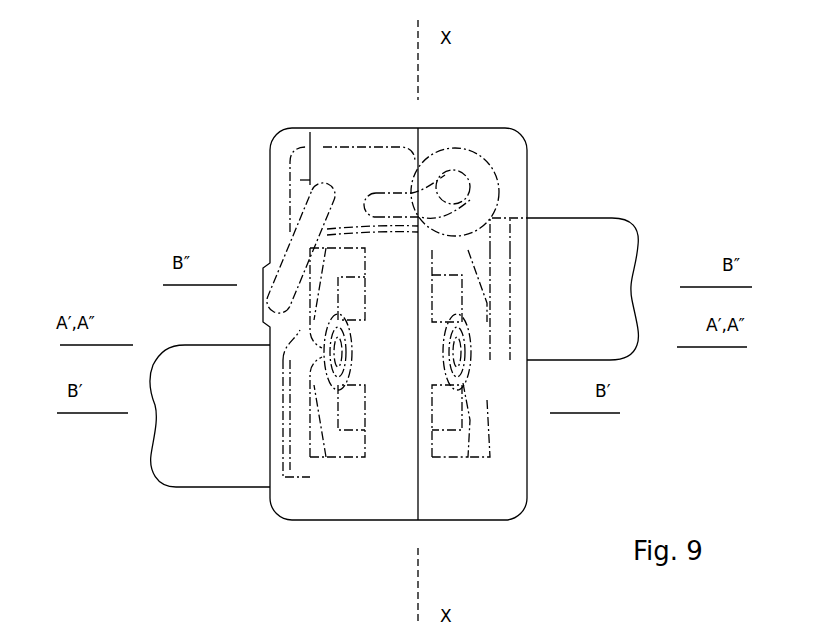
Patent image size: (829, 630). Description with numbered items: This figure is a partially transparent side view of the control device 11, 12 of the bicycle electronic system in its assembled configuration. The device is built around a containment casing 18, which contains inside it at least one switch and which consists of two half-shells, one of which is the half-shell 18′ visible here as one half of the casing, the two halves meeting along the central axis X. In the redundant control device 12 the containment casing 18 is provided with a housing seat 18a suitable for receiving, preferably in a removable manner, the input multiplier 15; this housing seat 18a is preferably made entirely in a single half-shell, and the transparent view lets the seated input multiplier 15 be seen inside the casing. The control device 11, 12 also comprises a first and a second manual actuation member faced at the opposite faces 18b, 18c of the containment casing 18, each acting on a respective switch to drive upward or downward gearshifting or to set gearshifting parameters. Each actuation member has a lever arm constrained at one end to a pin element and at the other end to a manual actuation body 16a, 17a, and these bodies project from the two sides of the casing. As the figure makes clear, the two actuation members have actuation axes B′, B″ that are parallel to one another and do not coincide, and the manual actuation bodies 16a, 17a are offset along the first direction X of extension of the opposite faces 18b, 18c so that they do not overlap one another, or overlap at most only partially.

The control device 11 is at (598, 138).
The redundant control device 12 is at (395, 324).
The input multiplier 15 is at (357, 167).
The manual actuation body 16a is at (623, 250).
The manual actuation body 17a is at (173, 457).
The containment casing 18 is at (535, 500).
The housing seat 18a is at (268, 153).
The face of the containment casing 18b is at (527, 453).
The face of the containment casing 18c is at (310, 180).
The half-shell 18′ is at (487, 128).